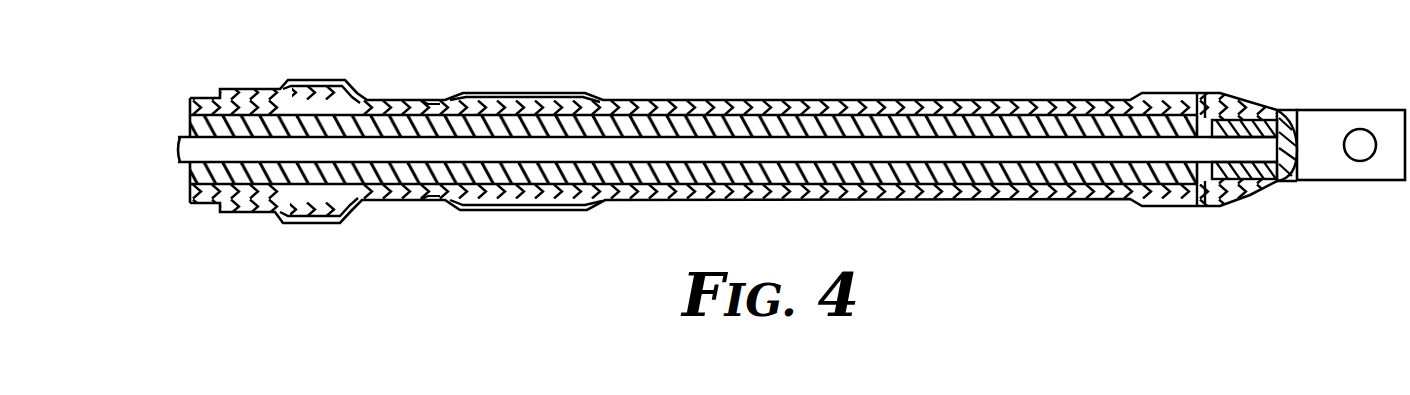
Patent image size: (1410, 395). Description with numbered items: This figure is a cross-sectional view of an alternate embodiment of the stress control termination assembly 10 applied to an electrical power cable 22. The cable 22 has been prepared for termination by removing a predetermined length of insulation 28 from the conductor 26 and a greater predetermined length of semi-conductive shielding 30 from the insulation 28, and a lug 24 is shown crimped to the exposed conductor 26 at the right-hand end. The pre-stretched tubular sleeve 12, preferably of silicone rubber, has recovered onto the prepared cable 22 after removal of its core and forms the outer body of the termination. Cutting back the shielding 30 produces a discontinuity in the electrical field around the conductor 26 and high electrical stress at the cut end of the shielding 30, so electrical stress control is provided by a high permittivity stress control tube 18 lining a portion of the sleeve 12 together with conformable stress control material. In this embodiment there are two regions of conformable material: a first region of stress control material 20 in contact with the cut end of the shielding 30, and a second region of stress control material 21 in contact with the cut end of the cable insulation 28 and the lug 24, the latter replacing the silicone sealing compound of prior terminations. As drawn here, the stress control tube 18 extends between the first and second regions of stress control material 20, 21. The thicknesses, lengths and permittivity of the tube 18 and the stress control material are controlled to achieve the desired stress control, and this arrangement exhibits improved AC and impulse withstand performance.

The termination assembly 10 is at (921, 92).
The tubular sleeve 12 is at (1051, 102).
The stress control tube 18 is at (817, 112).
The first region of stress control material 20 is at (567, 112).
The second region of stress control material 21 is at (1205, 120).
The electrical power cable 22 is at (186, 180).
The lug 24 is at (1336, 120).
The conductor 26 is at (1242, 158).
The insulation 28 is at (1085, 172).
The semi-conductive shielding 30 is at (398, 190).